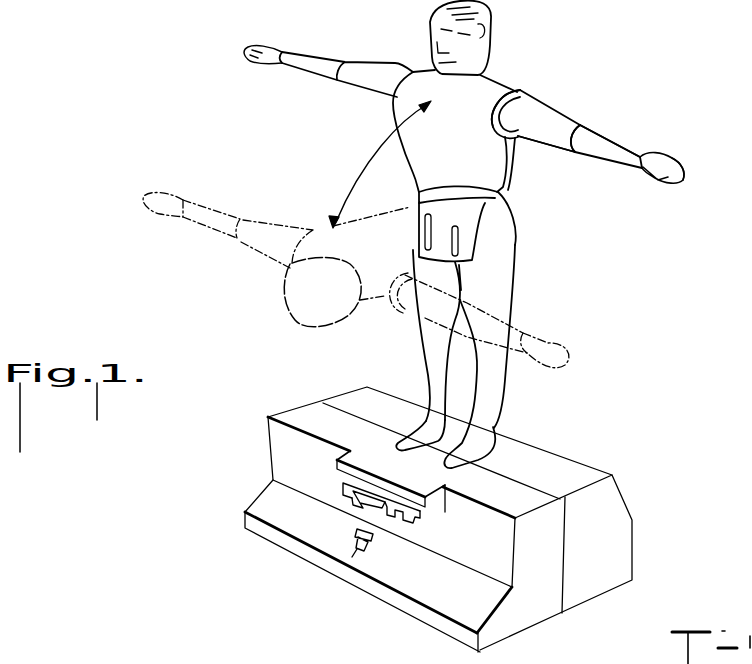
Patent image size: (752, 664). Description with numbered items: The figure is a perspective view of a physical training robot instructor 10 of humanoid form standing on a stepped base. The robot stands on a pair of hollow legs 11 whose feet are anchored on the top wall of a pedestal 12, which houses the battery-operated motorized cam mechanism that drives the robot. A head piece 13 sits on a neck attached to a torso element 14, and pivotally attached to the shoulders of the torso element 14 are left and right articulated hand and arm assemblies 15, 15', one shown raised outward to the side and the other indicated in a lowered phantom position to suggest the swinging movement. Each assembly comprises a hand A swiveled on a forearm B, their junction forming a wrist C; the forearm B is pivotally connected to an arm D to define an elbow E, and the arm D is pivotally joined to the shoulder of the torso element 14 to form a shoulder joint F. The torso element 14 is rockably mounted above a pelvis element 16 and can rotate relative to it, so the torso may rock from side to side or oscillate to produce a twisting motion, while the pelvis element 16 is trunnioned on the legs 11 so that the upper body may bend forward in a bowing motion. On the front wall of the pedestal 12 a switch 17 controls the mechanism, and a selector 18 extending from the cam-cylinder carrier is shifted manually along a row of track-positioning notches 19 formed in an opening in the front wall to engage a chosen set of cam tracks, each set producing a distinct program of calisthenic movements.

The PT robot instructor 10 is at (510, 70).
The hollow legs 11 is at (507, 265).
The pedestal 12 is at (597, 474).
The head piece 13 is at (495, 12).
The torso element 14 is at (405, 100).
The left articulated hand and arm assembly 15 is at (328, 57).
The right articulated hand and arm assembly 15' is at (601, 131).
The pelvis element 16 is at (507, 198).
The switch 17 is at (355, 551).
The selector 18 is at (354, 498).
The track-positioning notches 19 is at (408, 522).
The hand A is at (673, 170).
The forearm B is at (620, 142).
The wrist C is at (643, 170).
The arm D is at (543, 138).
The elbow E is at (575, 153).
The shoulder joint F is at (520, 90).